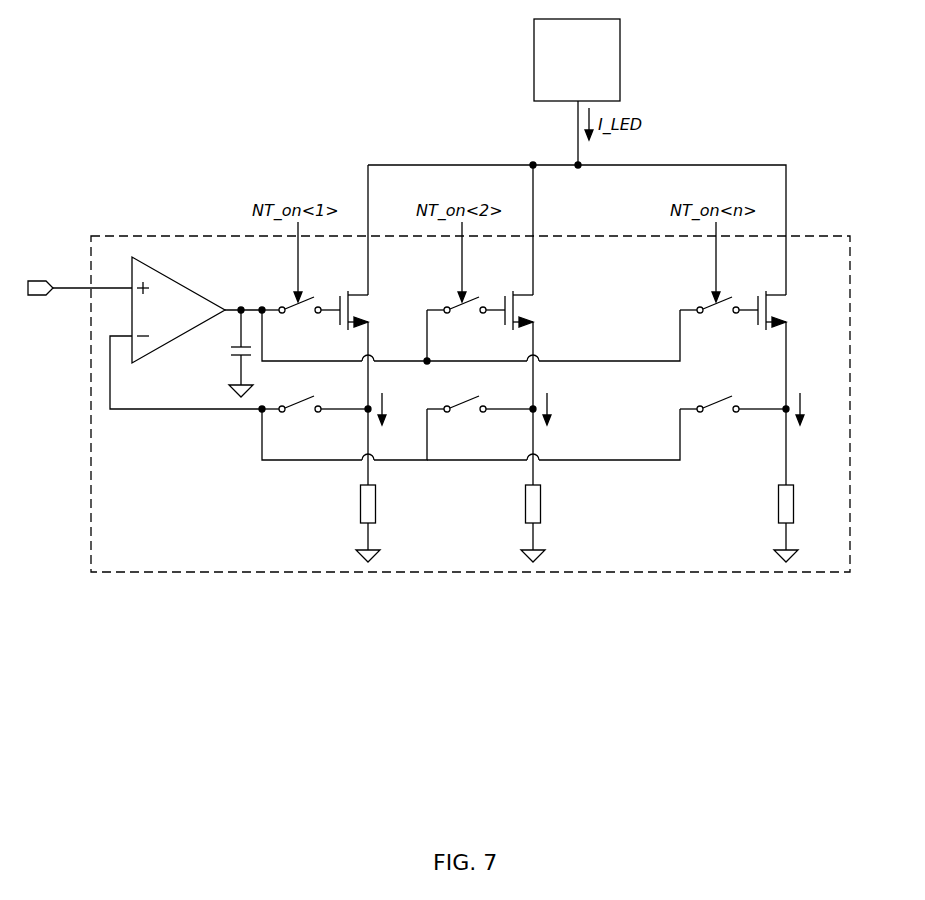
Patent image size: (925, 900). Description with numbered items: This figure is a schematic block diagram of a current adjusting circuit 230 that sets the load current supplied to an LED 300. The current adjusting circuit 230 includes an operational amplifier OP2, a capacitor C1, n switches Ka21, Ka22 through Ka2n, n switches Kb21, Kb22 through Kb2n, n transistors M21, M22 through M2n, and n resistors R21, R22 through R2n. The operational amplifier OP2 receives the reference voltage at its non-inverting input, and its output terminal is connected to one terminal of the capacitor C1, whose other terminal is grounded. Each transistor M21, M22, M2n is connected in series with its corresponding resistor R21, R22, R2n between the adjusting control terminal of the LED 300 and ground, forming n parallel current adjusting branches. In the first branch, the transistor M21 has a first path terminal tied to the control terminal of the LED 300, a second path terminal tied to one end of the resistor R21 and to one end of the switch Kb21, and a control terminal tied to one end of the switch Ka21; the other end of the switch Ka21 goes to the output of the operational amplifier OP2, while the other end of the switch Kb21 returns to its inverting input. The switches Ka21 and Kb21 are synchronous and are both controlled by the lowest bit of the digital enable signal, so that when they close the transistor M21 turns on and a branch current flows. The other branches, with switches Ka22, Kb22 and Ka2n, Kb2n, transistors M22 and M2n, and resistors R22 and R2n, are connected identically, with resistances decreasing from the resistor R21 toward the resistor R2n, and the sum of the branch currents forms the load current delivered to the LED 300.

The LED 300 is at (577, 60).
The current adjusting circuit 230 is at (186, 572).
The operational amplifier OP2 is at (178, 310).
The capacitor C1 is at (225, 353).
The transistor M21 is at (373, 310).
The transistor M22 is at (538, 310).
The transistor M2n is at (791, 310).
The resistor R21 is at (386, 504).
The resistor R22 is at (551, 504).
The resistor R2n is at (804, 504).
The switch Ka21 is at (301, 323).
The switch Ka22 is at (466, 323).
The switch Ka2n is at (719, 323).
The switch Kb21 is at (301, 422).
The switch Kb22 is at (466, 422).
The switch Kb2n is at (719, 422).